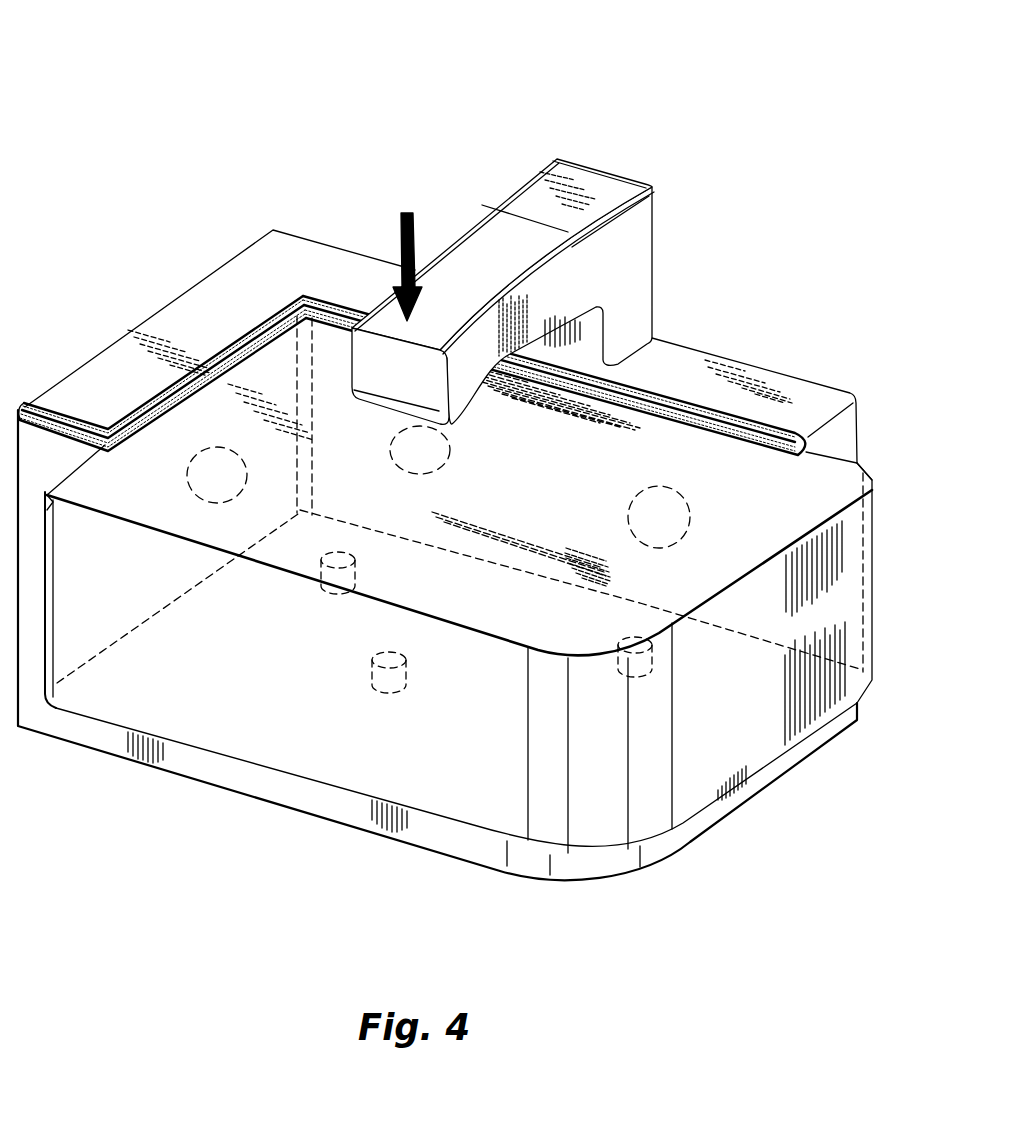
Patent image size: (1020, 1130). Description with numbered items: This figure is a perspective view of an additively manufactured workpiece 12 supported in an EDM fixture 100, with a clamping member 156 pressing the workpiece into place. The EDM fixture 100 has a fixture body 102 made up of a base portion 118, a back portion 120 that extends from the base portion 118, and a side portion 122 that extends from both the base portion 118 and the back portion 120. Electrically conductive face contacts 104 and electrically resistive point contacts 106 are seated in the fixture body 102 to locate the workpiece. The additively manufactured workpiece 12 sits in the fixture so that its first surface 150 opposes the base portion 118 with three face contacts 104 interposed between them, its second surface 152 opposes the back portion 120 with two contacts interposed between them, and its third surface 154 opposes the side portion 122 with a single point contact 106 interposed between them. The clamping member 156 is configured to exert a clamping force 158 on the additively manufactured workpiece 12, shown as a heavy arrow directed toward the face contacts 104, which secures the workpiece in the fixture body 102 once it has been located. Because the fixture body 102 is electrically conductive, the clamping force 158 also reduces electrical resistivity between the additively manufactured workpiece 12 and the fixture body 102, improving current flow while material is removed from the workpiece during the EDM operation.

The EDM fixture 100 is at (192, 148).
The additively manufactured workpiece 12 is at (759, 745).
The fixture body 102 is at (20, 396).
The face contacts 104 is at (324, 578).
The point contacts 106 is at (197, 482).
The base portion 118 is at (268, 790).
The back portion 120 is at (681, 372).
The side portion 122 is at (200, 305).
The first surface 150 is at (490, 612).
The second surface 152 is at (732, 462).
The third surface 154 is at (158, 463).
The clamping member 156 is at (475, 265).
The clamping force 158 is at (401, 232).